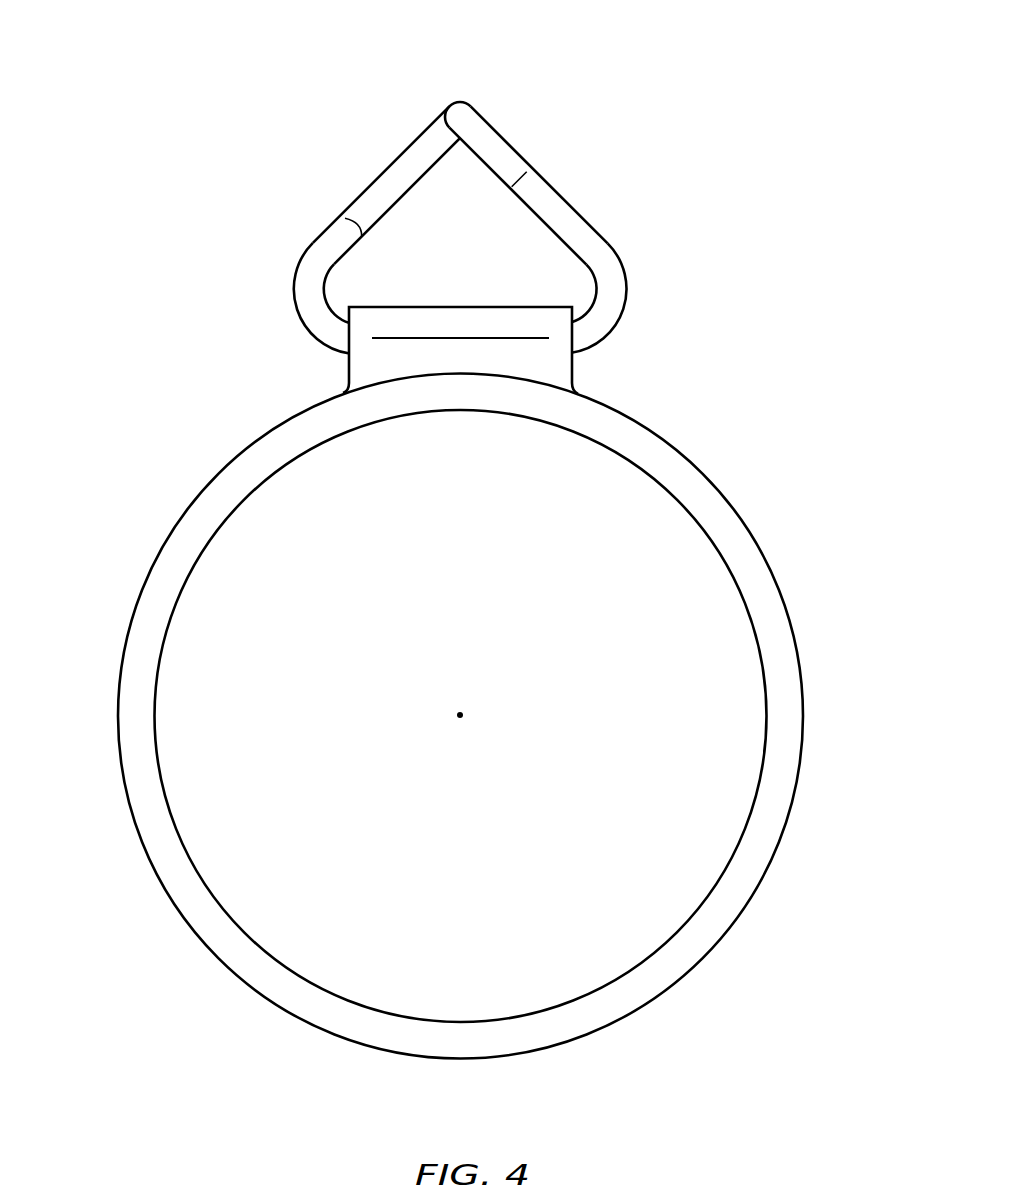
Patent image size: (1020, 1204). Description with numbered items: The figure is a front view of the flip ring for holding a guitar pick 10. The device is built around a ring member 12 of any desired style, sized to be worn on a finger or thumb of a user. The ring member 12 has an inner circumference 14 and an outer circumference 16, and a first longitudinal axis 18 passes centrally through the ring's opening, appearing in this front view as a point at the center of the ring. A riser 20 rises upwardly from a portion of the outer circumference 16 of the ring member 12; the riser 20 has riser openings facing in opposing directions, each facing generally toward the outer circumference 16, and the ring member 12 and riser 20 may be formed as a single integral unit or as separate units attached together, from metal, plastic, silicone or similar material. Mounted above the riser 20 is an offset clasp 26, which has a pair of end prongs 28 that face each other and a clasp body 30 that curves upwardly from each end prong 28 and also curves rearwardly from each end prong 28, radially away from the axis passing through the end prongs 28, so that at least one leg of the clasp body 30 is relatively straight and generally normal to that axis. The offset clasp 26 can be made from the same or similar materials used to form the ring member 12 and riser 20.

The flip ring for holding a guitar pick 10 is at (472, 531).
The ring member 12 is at (425, 716).
The inner circumference 14 is at (213, 892).
The outer circumference 16 is at (183, 918).
The first longitudinal axis 18 is at (460, 715).
The riser 20 is at (597, 379).
The offset clasp 26 is at (475, 213).
The end prongs 28 is at (577, 339).
The clasp body 30 is at (462, 117).